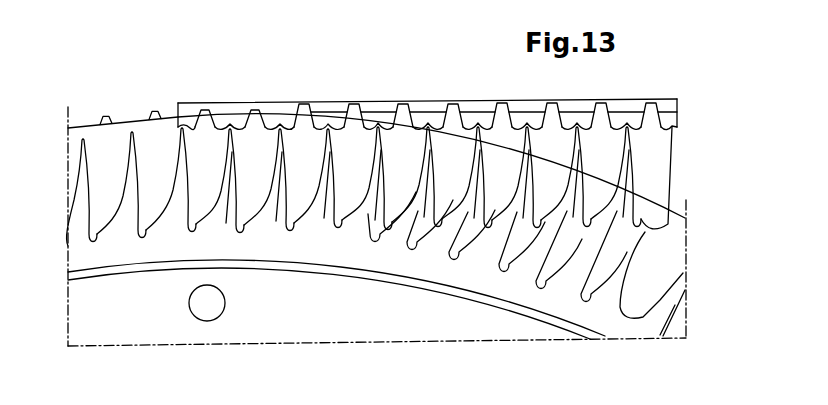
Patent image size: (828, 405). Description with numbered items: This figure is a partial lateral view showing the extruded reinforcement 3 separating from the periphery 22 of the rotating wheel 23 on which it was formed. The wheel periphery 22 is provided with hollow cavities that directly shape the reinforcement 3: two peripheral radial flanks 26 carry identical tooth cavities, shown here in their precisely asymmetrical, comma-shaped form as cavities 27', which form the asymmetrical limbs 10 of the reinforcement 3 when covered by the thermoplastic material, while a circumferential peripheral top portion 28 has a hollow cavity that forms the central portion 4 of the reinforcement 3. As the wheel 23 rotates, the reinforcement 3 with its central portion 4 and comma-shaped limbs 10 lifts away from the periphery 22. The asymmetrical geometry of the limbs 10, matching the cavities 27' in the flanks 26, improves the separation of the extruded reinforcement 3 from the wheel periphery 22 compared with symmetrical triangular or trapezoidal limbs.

The reinforcement 3 is at (674, 161).
The central portion 4 is at (304, 110).
The asymmetrical limbs 10 is at (203, 218).
The wheel periphery 22 is at (68, 190).
The wheel 23 is at (175, 332).
The peripheral radial flanks 26 is at (376, 197).
The comma-shaped cavities 27' is at (395, 288).
The circumferential peripheral top portion 28 is at (155, 108).